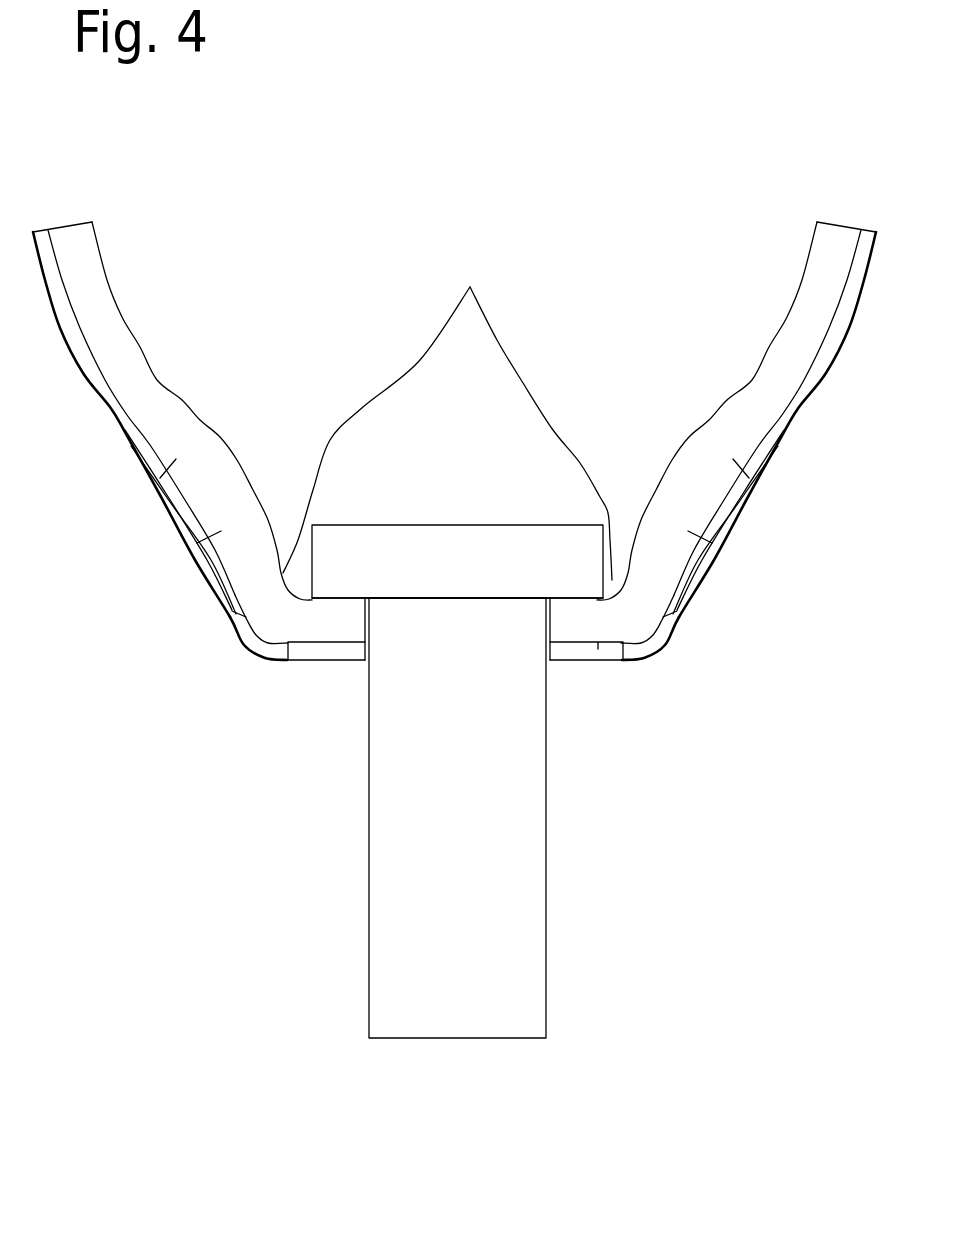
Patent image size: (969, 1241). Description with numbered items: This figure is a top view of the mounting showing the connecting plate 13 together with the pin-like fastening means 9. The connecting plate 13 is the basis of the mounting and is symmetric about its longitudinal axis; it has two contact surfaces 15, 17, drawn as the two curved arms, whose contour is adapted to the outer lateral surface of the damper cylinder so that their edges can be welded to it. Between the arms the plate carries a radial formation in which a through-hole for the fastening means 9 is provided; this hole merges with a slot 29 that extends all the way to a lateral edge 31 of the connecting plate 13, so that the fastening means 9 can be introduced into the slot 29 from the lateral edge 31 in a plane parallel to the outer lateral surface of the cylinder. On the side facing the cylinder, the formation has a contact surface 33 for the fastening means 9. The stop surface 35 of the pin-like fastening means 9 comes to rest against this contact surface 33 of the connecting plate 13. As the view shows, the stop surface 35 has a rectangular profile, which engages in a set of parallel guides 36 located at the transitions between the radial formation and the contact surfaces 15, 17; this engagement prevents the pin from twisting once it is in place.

The pin-like fastening means 9 is at (373, 945).
The connecting plate 13 is at (776, 608).
The contact surface 15 is at (112, 332).
The contact surface 17 is at (792, 298).
The slot 29 is at (550, 630).
The lateral edge 31 is at (277, 625).
The contact surface 33 is at (338, 612).
The stop surface 35 is at (570, 585).
The parallel guides 36 is at (447, 415).